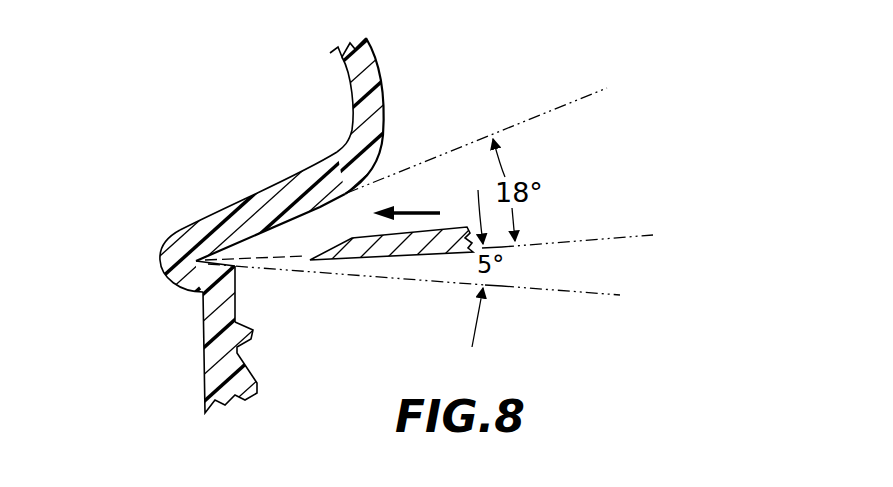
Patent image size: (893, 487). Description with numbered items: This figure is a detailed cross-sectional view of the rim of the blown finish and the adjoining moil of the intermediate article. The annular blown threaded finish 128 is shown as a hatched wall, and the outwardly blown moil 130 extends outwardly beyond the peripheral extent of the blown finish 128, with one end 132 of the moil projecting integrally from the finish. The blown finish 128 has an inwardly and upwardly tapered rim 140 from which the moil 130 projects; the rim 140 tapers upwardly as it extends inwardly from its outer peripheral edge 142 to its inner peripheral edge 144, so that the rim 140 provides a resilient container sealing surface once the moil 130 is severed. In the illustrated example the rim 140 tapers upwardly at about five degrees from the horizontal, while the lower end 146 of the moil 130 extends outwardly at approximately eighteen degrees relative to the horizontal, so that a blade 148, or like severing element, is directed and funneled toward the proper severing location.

The annular blown threaded finish 128 is at (237, 353).
The moil portion 130 is at (385, 93).
The one end of the moil 132 is at (262, 190).
The rim 140 is at (185, 293).
The outer peripheral edge 142 is at (237, 283).
The inner peripheral edge 144 is at (160, 263).
The lower end of the moil 146 is at (168, 237).
The blade 148 is at (388, 252).